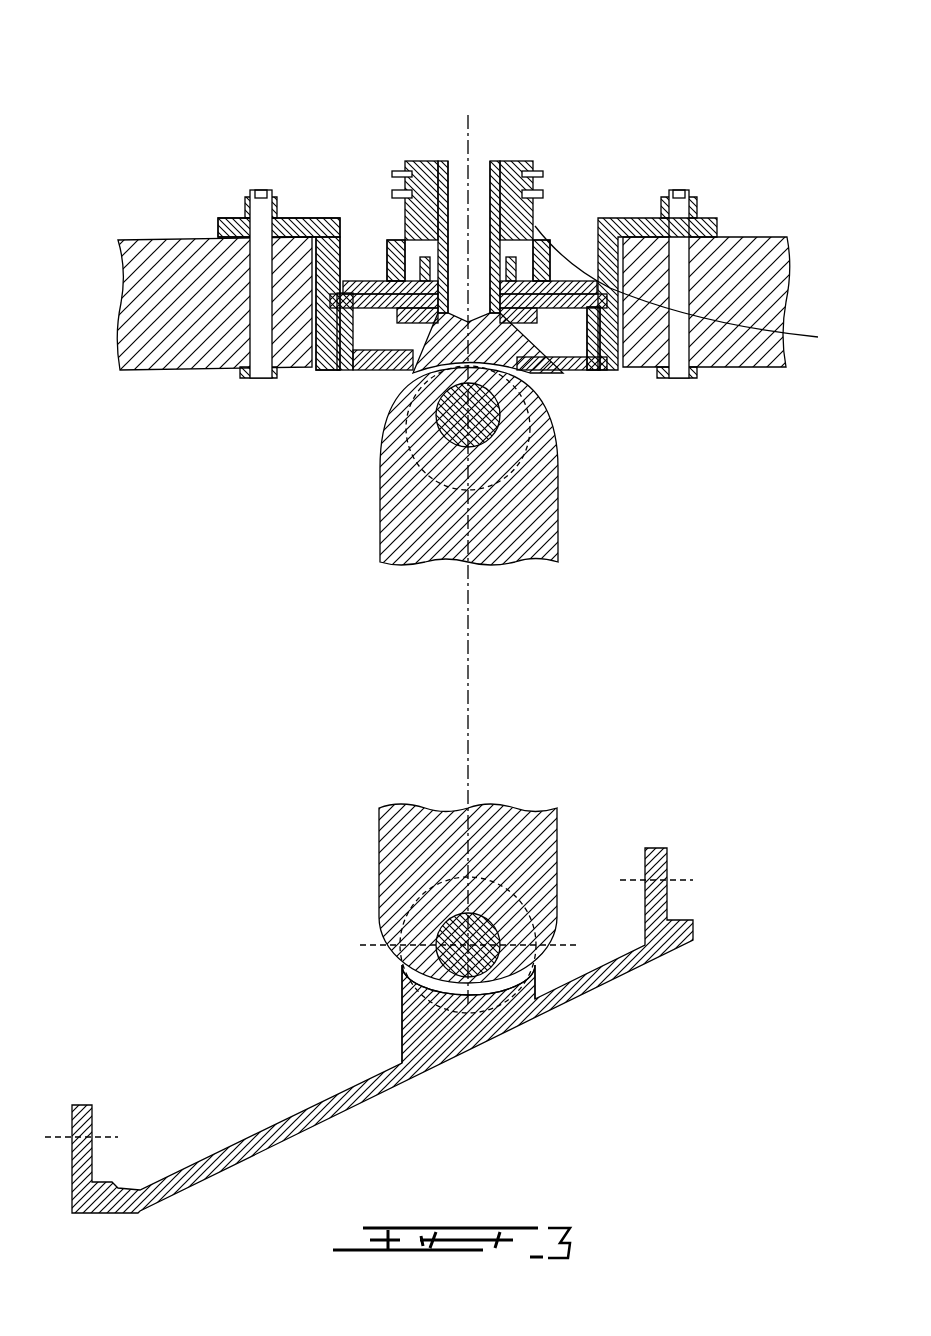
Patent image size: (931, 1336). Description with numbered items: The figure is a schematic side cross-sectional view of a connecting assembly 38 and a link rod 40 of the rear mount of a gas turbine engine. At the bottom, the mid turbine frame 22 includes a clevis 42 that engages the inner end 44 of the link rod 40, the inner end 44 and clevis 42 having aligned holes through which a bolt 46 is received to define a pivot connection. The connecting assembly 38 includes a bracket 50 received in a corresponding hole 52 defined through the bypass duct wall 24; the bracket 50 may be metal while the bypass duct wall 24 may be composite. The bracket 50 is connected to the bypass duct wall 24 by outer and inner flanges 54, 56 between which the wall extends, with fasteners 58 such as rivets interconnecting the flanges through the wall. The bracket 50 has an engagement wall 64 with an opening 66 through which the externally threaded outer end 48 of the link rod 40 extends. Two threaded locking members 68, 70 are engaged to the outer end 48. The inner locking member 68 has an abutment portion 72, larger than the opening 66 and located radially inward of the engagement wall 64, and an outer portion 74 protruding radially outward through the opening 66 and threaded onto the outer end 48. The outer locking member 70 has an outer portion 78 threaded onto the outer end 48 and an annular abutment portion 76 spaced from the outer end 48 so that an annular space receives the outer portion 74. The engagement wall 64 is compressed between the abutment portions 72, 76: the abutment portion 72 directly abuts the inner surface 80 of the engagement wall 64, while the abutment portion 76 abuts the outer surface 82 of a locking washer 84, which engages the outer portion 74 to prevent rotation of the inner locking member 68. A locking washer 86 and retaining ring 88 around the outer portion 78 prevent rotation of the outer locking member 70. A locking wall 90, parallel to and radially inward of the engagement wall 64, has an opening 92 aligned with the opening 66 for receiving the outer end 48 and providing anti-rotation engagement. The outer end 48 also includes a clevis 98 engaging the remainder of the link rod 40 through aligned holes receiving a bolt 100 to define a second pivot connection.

The mid turbine frame 22 is at (623, 950).
The bypass duct wall 24 is at (752, 262).
The connecting assembly 38 is at (703, 153).
The link rod 40 is at (557, 798).
The clevis 42 is at (403, 997).
The inner end 44 is at (543, 853).
The bolt 46 is at (500, 967).
The outer end 48 is at (540, 380).
The bracket 50 is at (632, 216).
The hole 52 is at (323, 373).
The outer flange 54 is at (290, 220).
The inner flange 56 is at (290, 373).
The fasteners 58 is at (258, 205).
The engagement wall 64 is at (367, 233).
The opening 66 is at (455, 245).
The inner locking member 68 is at (531, 263).
The outer locking member 70 is at (511, 158).
The abutment portion 72 is at (375, 372).
The outer portion 74 is at (386, 242).
The abutment portion 76 is at (694, 288).
The outer portion 78 is at (400, 170).
The inner surface 80 is at (348, 373).
The outer surface 82 is at (340, 252).
The locking washer 84 is at (327, 223).
The locking washer 86 is at (547, 185).
The retaining ring 88 is at (532, 162).
The locking wall 90 is at (587, 380).
The opening 92 is at (380, 463).
The clevis 98 is at (515, 415).
The bolt 100 is at (492, 462).